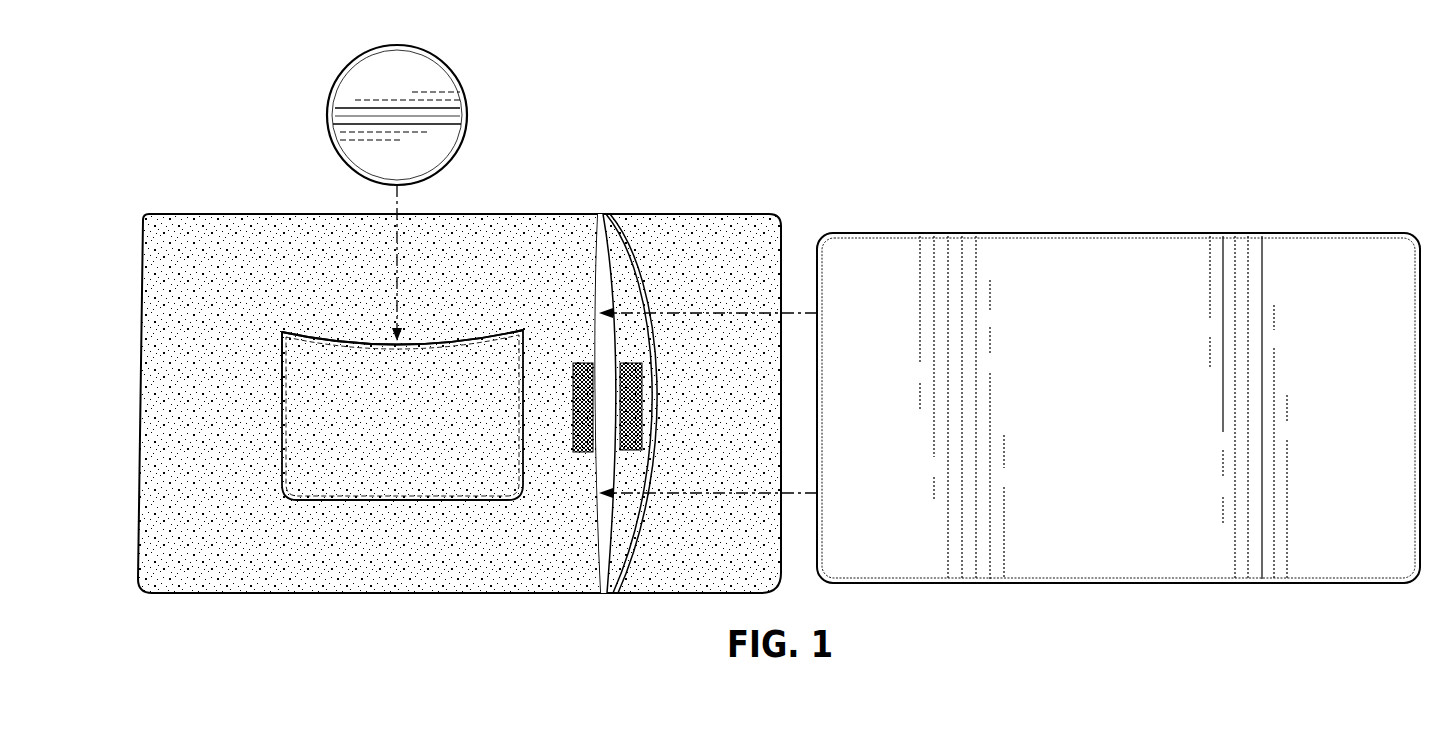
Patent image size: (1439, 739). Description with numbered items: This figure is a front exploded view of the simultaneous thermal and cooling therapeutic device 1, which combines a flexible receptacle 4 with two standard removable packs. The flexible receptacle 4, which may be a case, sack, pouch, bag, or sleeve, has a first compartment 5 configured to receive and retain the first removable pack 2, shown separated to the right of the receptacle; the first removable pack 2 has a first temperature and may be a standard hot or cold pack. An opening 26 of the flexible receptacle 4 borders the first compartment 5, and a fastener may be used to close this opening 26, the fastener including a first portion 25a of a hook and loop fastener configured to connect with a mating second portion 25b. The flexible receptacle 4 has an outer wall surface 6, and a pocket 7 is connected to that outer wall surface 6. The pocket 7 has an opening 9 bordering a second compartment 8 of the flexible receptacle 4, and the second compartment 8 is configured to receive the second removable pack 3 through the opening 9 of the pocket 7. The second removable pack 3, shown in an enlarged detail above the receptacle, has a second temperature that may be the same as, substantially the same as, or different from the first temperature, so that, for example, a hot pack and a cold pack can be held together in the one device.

The simultaneous thermal and cooling therapeutic device 1 is at (190, 140).
The first removable pack 2 is at (1062, 248).
The second removable pack 3 is at (467, 98).
The flexible receptacle 4 is at (772, 248).
The first compartment 5 is at (594, 531).
The outer wall surface 6 is at (557, 214).
The pocket 7 is at (378, 493).
The second compartment 8 is at (457, 337).
The opening 9 is at (325, 342).
The first portion of a hook and loop fastener 25a is at (592, 345).
The second fastener pad 25b is at (648, 382).
The opening 26 is at (605, 285).